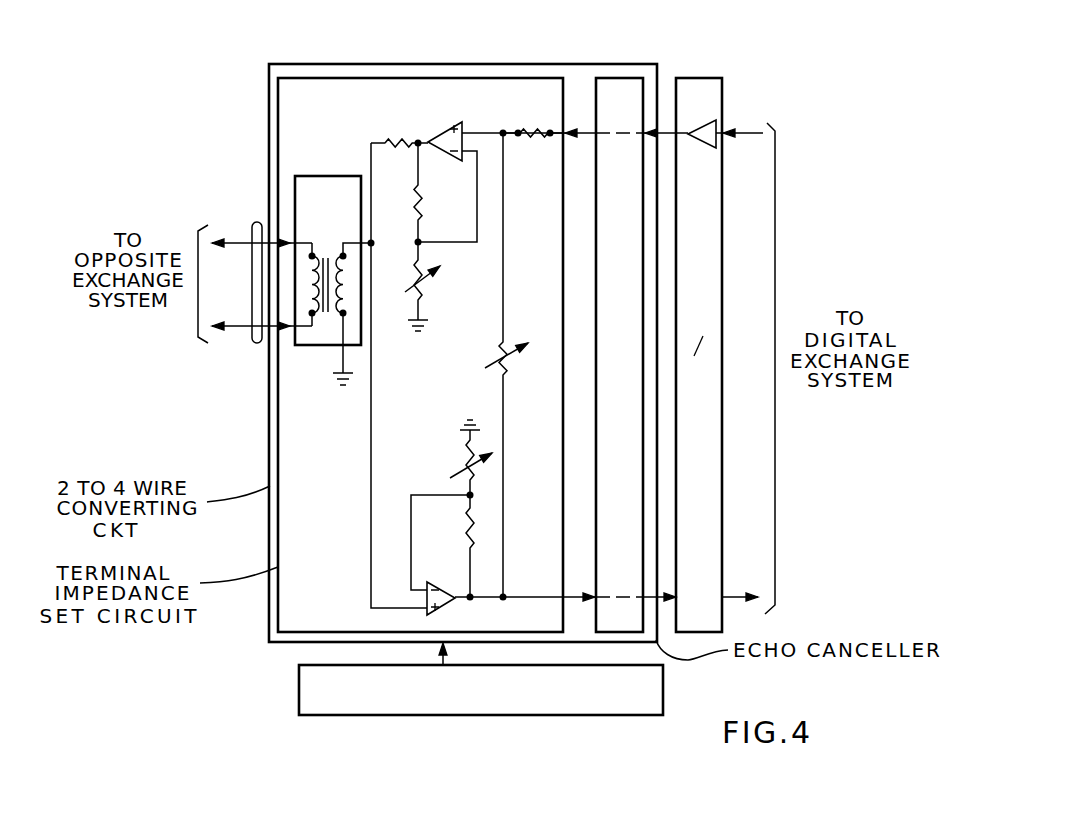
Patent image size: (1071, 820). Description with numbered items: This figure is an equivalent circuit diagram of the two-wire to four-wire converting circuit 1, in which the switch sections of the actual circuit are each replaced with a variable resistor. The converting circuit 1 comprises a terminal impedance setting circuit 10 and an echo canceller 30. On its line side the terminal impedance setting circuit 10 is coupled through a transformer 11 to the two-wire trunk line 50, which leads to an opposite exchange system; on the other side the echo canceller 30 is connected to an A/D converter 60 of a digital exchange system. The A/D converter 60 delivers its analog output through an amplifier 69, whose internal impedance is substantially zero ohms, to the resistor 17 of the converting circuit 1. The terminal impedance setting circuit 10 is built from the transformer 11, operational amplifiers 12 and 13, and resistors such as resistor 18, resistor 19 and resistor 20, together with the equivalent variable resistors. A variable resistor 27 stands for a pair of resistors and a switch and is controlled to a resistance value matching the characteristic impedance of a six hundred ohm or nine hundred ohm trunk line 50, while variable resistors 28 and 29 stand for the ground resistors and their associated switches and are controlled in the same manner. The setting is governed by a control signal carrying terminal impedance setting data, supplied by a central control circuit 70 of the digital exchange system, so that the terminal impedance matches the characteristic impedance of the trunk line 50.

The 2 to 4 converting circuit 1 is at (370, 65).
The terminal impedance setting circuit 10 is at (328, 77).
The transformer 11 is at (330, 176).
The operational amplifier 12 is at (444, 162).
The operational amplifier 13 is at (444, 589).
The resistor 17 is at (542, 142).
The resistor 18 is at (404, 142).
The resistor 19 is at (421, 201).
The resistor 20 is at (468, 524).
The variable resistor 27 is at (508, 366).
The variable resistor 28 is at (429, 290).
The variable resistor 29 is at (468, 458).
The echo canceller 30 is at (620, 78).
The trunk line 50 is at (257, 341).
The A/D converter 60 is at (693, 78).
The amplifier 69 is at (703, 148).
The central control circuit 70 is at (299, 688).